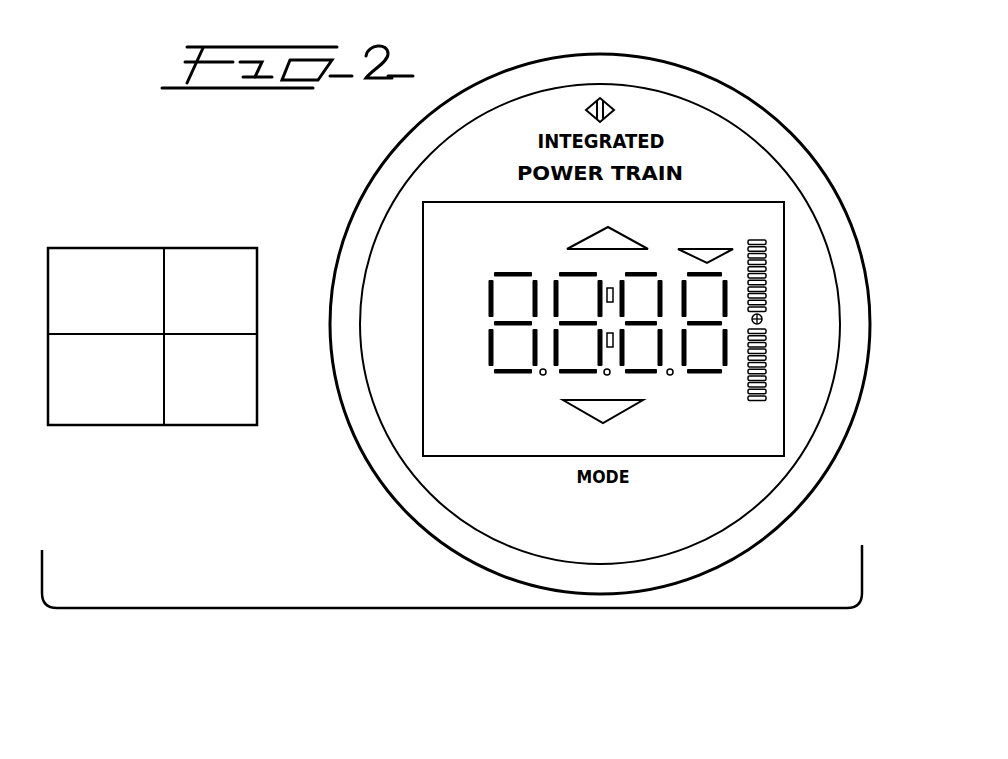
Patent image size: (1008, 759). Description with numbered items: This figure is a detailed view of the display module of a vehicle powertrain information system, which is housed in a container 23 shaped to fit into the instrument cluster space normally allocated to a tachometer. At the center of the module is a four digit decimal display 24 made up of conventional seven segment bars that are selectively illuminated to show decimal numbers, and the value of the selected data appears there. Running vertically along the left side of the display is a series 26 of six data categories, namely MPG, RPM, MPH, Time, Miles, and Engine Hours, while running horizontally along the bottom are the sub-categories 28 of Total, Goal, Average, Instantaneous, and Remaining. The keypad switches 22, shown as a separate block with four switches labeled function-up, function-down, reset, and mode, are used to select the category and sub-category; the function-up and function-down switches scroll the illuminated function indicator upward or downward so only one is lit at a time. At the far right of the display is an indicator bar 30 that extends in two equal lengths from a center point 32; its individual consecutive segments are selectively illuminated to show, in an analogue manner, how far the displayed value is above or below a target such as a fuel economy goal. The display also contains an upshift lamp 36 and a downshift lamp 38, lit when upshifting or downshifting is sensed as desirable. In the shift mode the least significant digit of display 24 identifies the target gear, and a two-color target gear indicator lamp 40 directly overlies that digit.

The keypad switches 22 is at (183, 425).
The container 23 is at (780, 153).
The four digit decimal display 24 is at (558, 272).
The series of data categories 26 is at (455, 236).
The sub-categories 28 is at (410, 441).
The indicator bar 30 is at (757, 228).
The center point 32 is at (763, 319).
The upshift lamp 36 is at (614, 232).
The downshift lamp 38 is at (593, 415).
The target gear indicator lamp 40 is at (747, 260).